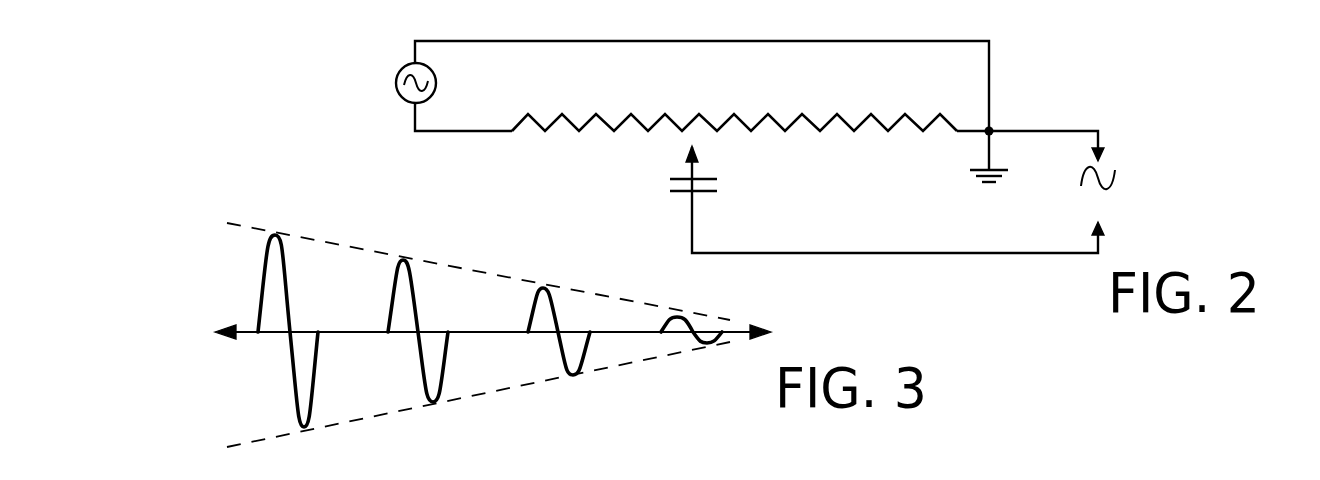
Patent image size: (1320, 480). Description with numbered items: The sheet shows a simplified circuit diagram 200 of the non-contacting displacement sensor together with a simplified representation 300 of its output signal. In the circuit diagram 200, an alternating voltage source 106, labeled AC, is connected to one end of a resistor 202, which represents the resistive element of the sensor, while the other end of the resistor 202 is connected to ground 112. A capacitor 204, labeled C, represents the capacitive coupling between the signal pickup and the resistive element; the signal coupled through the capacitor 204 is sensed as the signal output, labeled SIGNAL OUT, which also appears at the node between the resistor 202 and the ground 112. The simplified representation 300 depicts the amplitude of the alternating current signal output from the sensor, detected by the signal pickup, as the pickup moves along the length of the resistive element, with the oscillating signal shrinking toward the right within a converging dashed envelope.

In FIG. 2, the simplified circuit diagram 200 is at (311, 31).
In FIG. 2, the alternating voltage source 106 is at (402, 98).
In FIG. 2, the resistor 202 is at (840, 115).
In FIG. 2, the capacitor 204 is at (745, 180).
In FIG. 2, the ground 112 is at (988, 152).
In FIG. 3, the simplified representation 300 is at (240, 195).